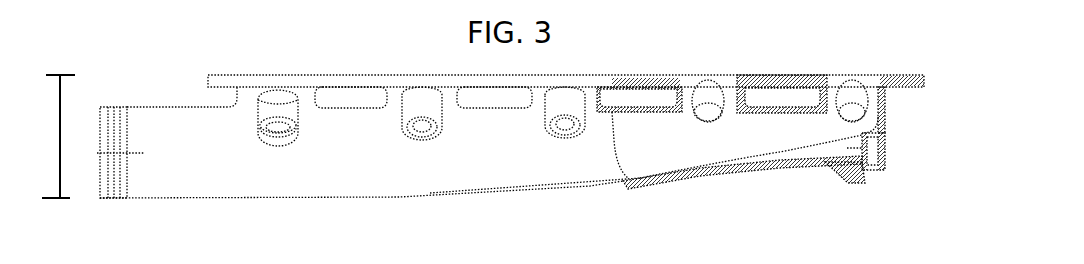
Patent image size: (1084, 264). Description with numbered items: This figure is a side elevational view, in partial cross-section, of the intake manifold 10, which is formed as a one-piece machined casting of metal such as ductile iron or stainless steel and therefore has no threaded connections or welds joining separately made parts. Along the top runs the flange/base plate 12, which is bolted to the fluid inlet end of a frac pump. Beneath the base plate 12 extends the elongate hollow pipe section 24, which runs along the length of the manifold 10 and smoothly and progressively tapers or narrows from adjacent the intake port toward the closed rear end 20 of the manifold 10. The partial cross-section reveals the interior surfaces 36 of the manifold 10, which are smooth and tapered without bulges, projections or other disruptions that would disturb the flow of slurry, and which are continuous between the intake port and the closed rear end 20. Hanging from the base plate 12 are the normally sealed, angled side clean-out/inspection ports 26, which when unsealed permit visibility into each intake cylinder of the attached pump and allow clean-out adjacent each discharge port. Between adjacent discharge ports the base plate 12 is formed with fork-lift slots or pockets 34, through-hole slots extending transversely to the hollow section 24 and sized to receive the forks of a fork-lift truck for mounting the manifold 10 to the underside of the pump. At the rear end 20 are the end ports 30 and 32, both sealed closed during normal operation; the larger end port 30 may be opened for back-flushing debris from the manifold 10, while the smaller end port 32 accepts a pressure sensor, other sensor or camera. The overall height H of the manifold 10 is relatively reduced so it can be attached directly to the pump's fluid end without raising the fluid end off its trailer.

The overall height H is at (73, 112).
The intake manifold 10 is at (190, 177).
The flange/base plate 12 is at (293, 75).
The rear end 20 is at (883, 106).
The elongate hollow pipe section 24 is at (356, 177).
The side clean-out/inspection ports 26 is at (438, 140).
The end port 30 is at (882, 147).
The end port 32 is at (840, 178).
The fork-lift slots or pockets 34 is at (473, 97).
The interior surfaces 36 is at (672, 167).